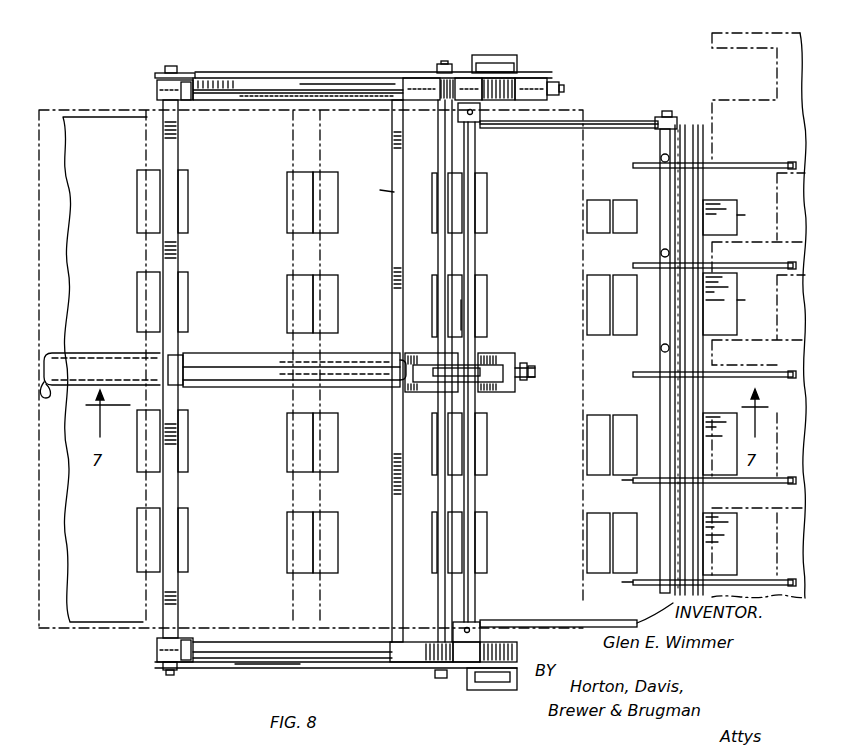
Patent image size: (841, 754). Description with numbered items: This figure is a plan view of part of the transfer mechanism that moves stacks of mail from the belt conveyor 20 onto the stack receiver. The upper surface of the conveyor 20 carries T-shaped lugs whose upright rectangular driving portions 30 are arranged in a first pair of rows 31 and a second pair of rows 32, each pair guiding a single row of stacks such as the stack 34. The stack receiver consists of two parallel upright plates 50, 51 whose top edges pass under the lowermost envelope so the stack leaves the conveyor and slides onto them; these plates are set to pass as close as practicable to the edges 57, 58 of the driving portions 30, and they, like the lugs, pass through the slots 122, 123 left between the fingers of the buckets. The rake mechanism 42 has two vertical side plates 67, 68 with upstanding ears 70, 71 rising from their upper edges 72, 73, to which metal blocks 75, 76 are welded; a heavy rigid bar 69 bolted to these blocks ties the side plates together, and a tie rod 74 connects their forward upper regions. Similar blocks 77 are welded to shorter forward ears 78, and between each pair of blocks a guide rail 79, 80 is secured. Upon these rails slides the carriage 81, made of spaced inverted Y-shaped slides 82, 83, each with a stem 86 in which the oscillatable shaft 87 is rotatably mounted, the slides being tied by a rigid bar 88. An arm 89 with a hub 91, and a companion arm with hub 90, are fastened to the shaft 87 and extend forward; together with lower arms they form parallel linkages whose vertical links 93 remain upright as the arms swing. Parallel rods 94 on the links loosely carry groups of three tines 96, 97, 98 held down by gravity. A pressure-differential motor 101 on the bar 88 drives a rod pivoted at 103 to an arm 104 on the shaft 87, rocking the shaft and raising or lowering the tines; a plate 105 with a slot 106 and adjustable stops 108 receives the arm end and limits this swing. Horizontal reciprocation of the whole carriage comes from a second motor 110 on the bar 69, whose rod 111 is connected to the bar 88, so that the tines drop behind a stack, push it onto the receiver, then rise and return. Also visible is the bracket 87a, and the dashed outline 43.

The belt conveyor 20 is at (60, 155).
The driving portion 30 is at (737, 222).
The first pair of rows 31 is at (318, 455).
The second pair of rows 32 is at (318, 222).
The stack of mail 34 is at (50, 112).
The rake mechanism 42 is at (232, 72).
The outline 43 is at (705, 41).
The plate 50 is at (644, 578).
The plate 51 is at (650, 458).
The edge of driving portion 57 is at (612, 585).
The edge of driving portion 58 is at (610, 481).
The side plate 67 is at (222, 670).
The side plate 68 is at (292, 72).
The rigid bar 69 is at (172, 212).
The upstanding ear 70 is at (160, 666).
The upstanding ear 71 is at (158, 72).
The upper edge 72 is at (256, 668).
The upper edge 73 is at (252, 76).
The tie rod 74 is at (438, 264).
The metal block 75 is at (160, 90).
The metal block 76 is at (160, 650).
The block 77 is at (552, 80).
The ear 78 is at (526, 76).
The guide rail 79 is at (254, 104).
The guide rail 80 is at (240, 652).
The carriage 81 is at (478, 312).
The slide 82 is at (422, 662).
The slide 83 is at (416, 76).
The stem 86 is at (468, 76).
The oscillatable shaft 87 is at (476, 246).
The column part 87a is at (373, 194).
The rigid bar 88 is at (552, 128).
The arm 89 is at (510, 620).
The hub 90 is at (480, 118).
The hub 91 is at (484, 622).
The vertical link 93 is at (658, 118).
The parallel rod 94 is at (660, 320).
The tine 96 is at (661, 156).
The tine 97 is at (661, 253).
The tine 98 is at (661, 348).
The pressure-differential operated motor 101 is at (328, 358).
The pivotal connection 103 is at (446, 392).
The arm 104 is at (448, 356).
The plate 105 is at (490, 356).
The slot 106 is at (502, 386).
The adjustable stop 108 is at (532, 366).
The pressure-differential operated motor 110 is at (90, 352).
The rod 111 is at (220, 366).
The slot 122 is at (756, 318).
The slot 123 is at (756, 226).